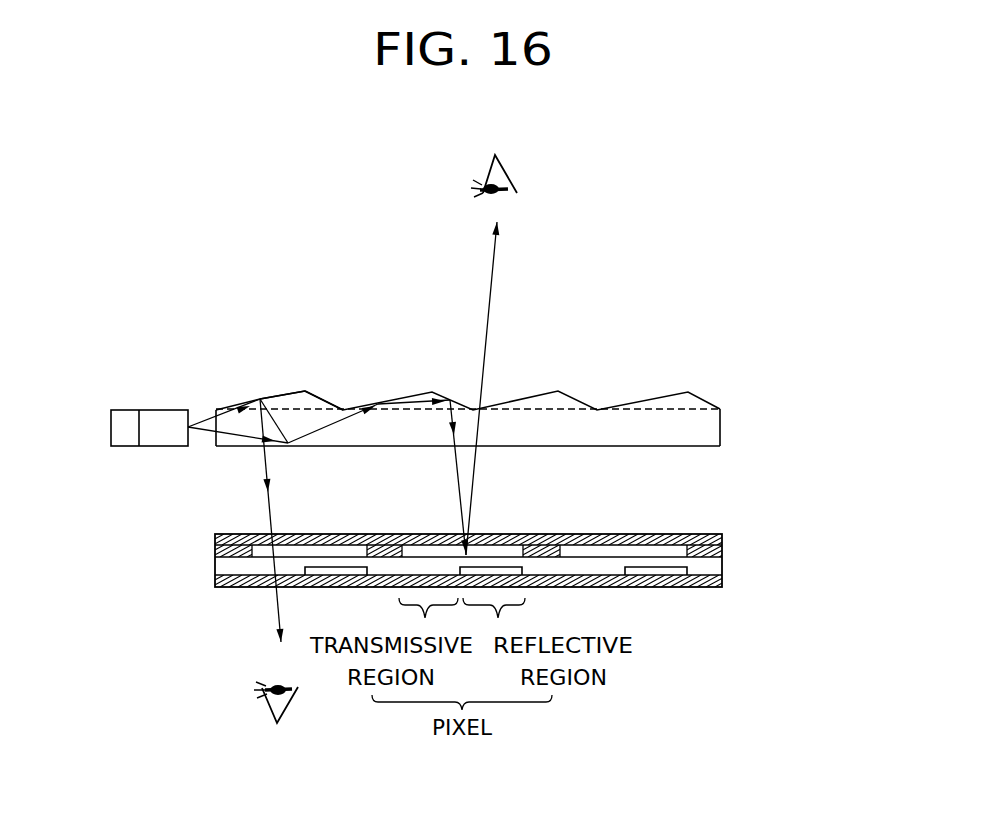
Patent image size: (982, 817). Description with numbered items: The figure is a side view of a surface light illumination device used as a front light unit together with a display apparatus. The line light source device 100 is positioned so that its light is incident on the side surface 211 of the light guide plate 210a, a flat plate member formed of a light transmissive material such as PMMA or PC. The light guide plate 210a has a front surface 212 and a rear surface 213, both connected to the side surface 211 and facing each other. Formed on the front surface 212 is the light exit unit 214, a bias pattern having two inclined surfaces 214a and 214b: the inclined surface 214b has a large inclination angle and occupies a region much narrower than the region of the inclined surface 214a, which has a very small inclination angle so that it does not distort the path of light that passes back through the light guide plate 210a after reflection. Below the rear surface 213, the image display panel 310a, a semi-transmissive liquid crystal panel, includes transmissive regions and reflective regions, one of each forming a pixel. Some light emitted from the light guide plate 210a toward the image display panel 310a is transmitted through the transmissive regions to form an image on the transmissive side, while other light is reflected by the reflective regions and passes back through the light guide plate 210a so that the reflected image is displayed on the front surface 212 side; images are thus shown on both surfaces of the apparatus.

The line light source device 100 is at (145, 405).
The light guide plate 210a is at (508, 420).
The side surface 211 is at (210, 441).
The front surface 212 is at (552, 410).
The rear surface 213 is at (697, 448).
The light exit unit 214 is at (485, 369).
The inclined surface 214a is at (283, 395).
The inclined surface 214b is at (326, 400).
The image display panel 310a is at (733, 562).